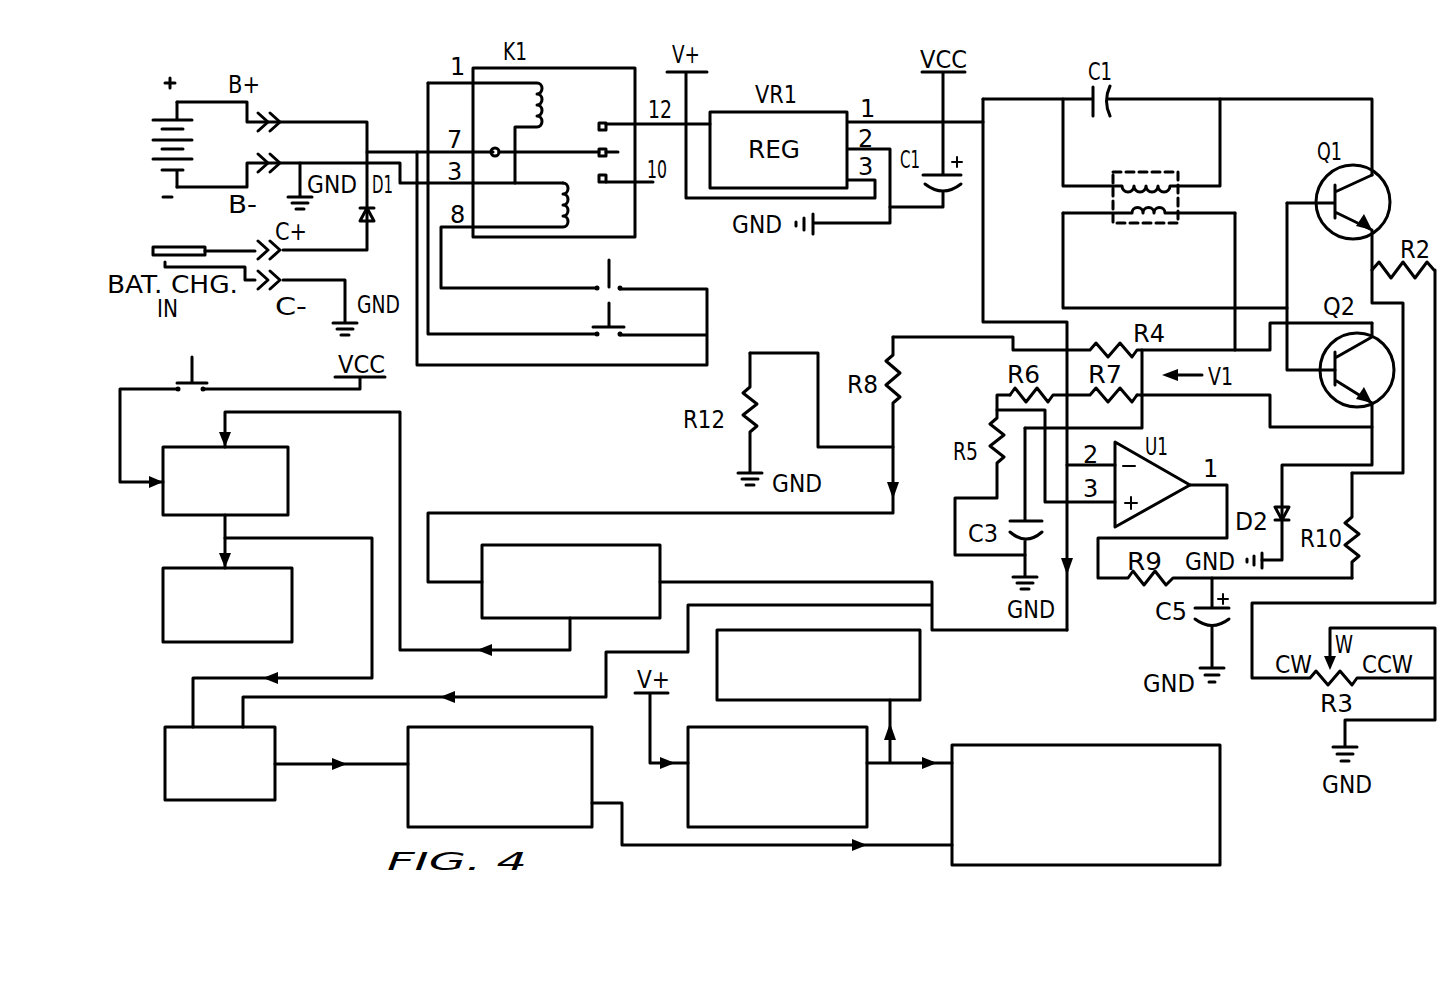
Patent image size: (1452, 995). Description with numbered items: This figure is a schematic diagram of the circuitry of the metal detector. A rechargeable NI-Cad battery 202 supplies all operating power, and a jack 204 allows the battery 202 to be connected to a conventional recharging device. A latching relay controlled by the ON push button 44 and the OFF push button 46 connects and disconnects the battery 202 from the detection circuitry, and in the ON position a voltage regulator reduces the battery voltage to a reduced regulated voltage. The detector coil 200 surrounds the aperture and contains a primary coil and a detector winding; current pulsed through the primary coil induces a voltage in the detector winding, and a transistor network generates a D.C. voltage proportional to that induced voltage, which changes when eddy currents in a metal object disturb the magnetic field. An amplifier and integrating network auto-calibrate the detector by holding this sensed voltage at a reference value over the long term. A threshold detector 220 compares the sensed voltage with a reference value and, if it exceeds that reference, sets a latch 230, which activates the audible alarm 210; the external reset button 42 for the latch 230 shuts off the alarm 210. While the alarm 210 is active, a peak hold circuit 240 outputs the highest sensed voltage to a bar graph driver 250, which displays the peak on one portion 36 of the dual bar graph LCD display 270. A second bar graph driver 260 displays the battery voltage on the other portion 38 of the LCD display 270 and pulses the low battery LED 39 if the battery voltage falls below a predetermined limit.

The rechargeable NI-Cad battery 202 is at (150, 153).
The jack 204 is at (222, 267).
The OFF push button 46 is at (620, 284).
The ON push button 44 is at (660, 318).
The RESET button 42 is at (194, 362).
The latch 230 is at (288, 490).
The audible alarm 210 is at (292, 615).
The threshold detector 220 is at (660, 560).
The peak hold circuit 240 is at (275, 742).
The bar graph driver 250 is at (408, 803).
The second bar graph driver 260 is at (688, 783).
The LED low battery indicator 39 is at (920, 668).
The LCD bar graph 38 is at (962, 765).
The peak-hold type LCD bar graph 36 is at (962, 847).
The dual bar graph LCD display 270 is at (1104, 784).
The detector coil 200 is at (1177, 250).